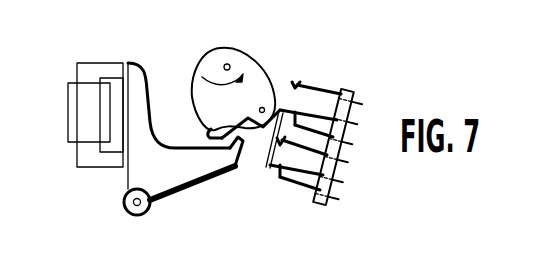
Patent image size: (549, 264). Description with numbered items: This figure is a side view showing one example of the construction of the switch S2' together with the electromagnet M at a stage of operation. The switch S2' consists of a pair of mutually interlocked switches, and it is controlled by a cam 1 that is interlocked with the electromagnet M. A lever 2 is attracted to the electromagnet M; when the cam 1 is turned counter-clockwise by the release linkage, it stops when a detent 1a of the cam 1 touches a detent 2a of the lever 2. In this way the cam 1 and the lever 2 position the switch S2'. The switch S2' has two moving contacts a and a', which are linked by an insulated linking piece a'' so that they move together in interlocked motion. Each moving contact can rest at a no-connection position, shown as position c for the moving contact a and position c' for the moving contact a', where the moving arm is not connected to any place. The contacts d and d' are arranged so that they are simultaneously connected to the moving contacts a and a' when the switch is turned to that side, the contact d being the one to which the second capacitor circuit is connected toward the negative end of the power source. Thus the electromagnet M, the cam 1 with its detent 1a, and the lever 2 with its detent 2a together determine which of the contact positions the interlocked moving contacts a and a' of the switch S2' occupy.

The electromagnet M is at (95, 115).
The cam 1 is at (203, 77).
The detent of the cam 1a is at (204, 126).
The lever 2 is at (135, 173).
The detent of the lever 2a is at (222, 156).
The moving contact a is at (308, 110).
The moving contact a' is at (296, 163).
The insulated linking piece a'' is at (256, 149).
The no-connection position c is at (314, 126).
The no-connection position c' is at (292, 192).
The contact d is at (315, 75).
The contact d' is at (302, 140).
The switch S2' is at (355, 133).